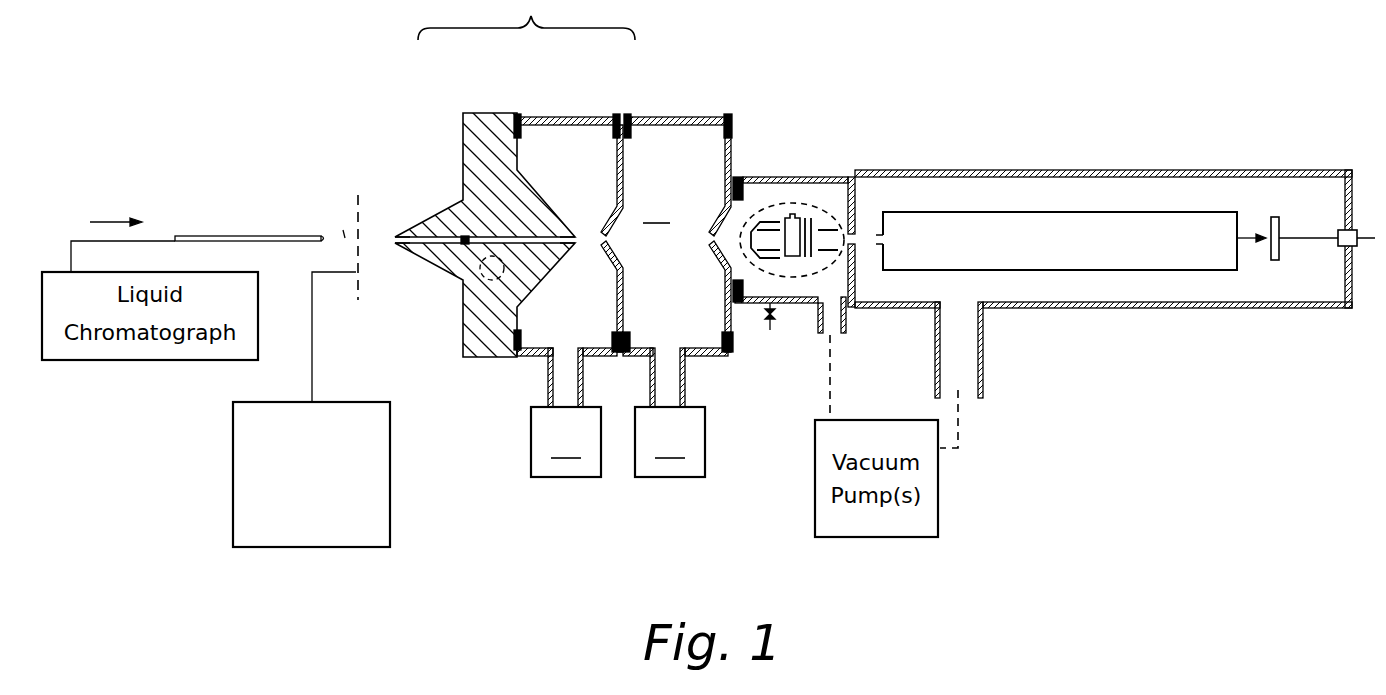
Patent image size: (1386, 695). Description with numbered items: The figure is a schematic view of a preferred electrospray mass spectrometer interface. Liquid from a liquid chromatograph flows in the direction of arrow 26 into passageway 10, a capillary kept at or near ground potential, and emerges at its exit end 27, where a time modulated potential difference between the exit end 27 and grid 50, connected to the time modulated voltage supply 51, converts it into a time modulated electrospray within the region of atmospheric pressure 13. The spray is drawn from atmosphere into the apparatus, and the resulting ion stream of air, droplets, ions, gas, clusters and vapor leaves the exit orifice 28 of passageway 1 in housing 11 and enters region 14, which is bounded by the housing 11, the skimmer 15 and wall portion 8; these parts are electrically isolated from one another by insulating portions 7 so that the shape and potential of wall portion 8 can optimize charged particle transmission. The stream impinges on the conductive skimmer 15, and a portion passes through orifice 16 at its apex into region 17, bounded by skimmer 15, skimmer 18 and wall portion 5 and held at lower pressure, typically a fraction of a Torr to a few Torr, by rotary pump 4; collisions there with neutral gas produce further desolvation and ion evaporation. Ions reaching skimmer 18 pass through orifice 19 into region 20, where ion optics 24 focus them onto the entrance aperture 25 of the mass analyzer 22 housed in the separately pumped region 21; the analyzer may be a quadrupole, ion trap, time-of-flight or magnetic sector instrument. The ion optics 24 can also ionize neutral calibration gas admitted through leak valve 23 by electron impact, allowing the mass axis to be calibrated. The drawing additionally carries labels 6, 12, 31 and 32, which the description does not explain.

The passageway 1 is at (464, 243).
The rotary pump 4 is at (664, 412).
The wall portion 5 is at (704, 354).
The vacuum pump 6 is at (574, 412).
The insulating portions 7 is at (518, 117).
The wall portion 8 is at (551, 117).
The passageway 10 is at (203, 236).
The housing 11 is at (482, 122).
The inlet tip 12 is at (401, 239).
The region of atmospheric pressure 13 is at (345, 236).
The region 14 is at (557, 322).
The skimmer 15 is at (612, 218).
The orifice 16 is at (603, 246).
The region 17 is at (678, 170).
The skimmer 18 is at (724, 205).
The orifice 19 is at (709, 230).
The region 20 is at (753, 207).
The region 21 is at (907, 197).
The mass analyzer 22 is at (1072, 213).
The leak valve 23 is at (770, 332).
The ion optics 24 is at (796, 203).
The entrance aperture 25 is at (880, 237).
The arrow 26 is at (111, 222).
The exit end 27 is at (323, 236).
The exit orifice 28 is at (573, 236).
The ionization region 31 is at (481, 283).
The interface assembly 32 is at (526, 20).
The grid 50 is at (358, 186).
The time modulated voltage supply 51 is at (233, 489).